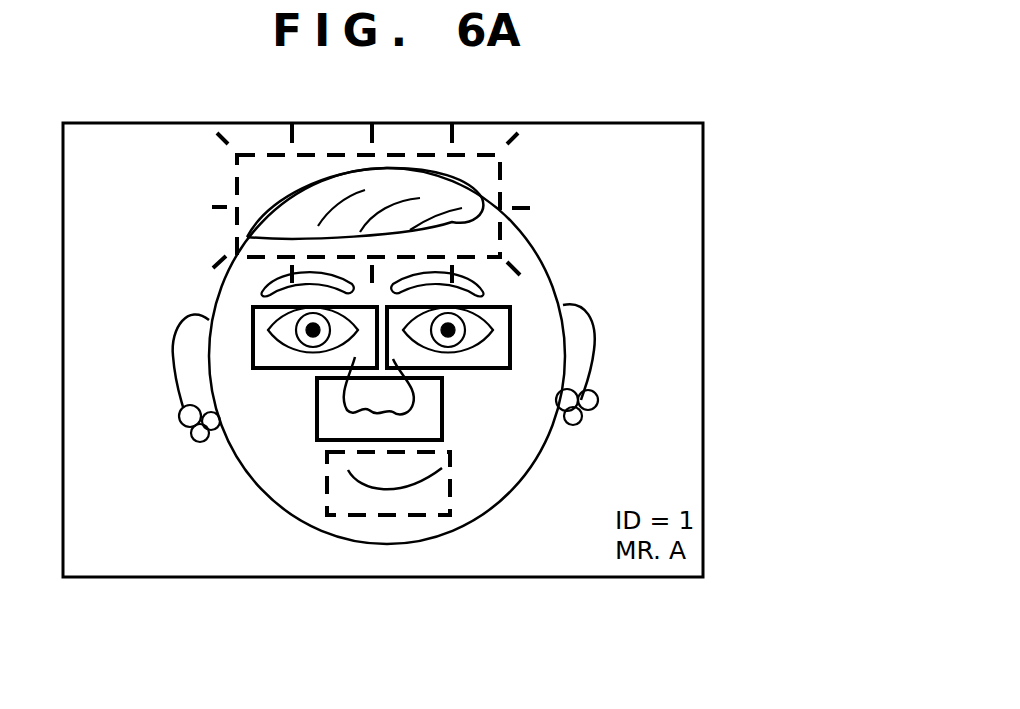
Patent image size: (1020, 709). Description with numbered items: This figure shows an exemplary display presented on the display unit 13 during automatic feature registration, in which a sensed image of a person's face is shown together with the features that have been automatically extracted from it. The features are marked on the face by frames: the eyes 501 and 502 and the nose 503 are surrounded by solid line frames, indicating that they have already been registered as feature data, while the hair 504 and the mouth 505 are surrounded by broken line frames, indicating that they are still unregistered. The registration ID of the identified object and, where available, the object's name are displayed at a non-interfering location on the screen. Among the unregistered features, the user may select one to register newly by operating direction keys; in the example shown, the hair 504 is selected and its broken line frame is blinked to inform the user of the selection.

The display unit 13 is at (704, 196).
The eye 501 is at (253, 320).
The eye 502 is at (511, 320).
The nose 503 is at (317, 425).
The hair 504 is at (232, 195).
The mouth 505 is at (452, 508).